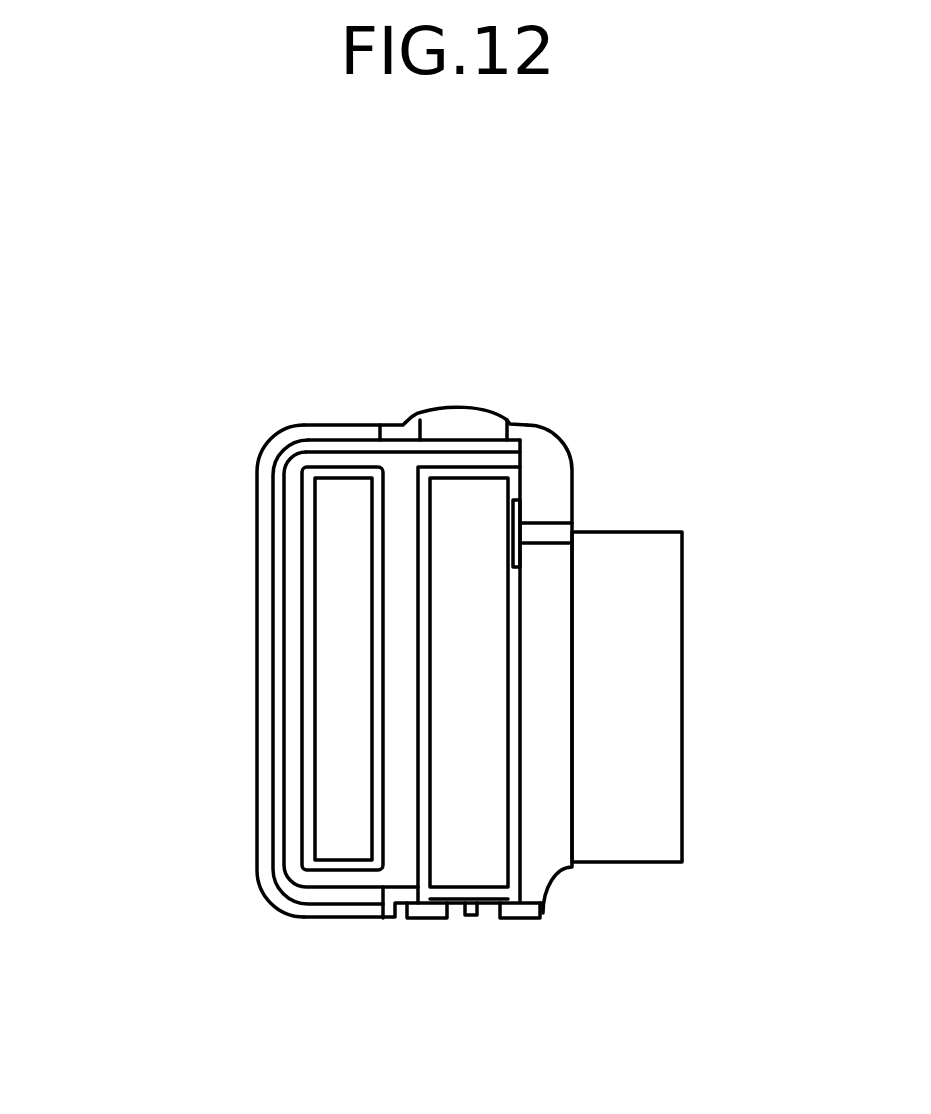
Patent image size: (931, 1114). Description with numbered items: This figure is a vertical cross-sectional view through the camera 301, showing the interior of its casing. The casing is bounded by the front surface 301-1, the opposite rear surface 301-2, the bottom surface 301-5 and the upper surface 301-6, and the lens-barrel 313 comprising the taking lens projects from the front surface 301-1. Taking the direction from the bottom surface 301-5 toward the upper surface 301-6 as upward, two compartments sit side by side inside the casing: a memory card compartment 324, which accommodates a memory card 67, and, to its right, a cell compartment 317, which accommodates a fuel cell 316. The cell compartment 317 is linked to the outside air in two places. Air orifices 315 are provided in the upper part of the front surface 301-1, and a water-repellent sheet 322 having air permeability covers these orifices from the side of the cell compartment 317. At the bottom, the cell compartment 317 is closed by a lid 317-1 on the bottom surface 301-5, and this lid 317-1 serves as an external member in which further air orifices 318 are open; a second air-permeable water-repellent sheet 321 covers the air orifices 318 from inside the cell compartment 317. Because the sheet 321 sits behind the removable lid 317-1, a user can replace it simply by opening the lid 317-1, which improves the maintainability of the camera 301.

The camera 301 is at (208, 923).
The front surface 301-1 is at (572, 870).
The rear surface 301-2 is at (253, 785).
The bottom surface 301-5 is at (332, 920).
The upper surface 301-6 is at (333, 423).
The memory card 67 is at (343, 538).
The lens-barrel 313 is at (682, 759).
The air orifices 315 is at (548, 533).
The fuel cell 316 is at (470, 500).
The cell compartment 317 is at (515, 480).
The lid 317-1 is at (527, 919).
The air orifices 318 is at (453, 918).
The water-repellent sheet 321 is at (483, 915).
The water-repellent sheet 322 is at (523, 557).
The memory card compartment 324 is at (307, 565).